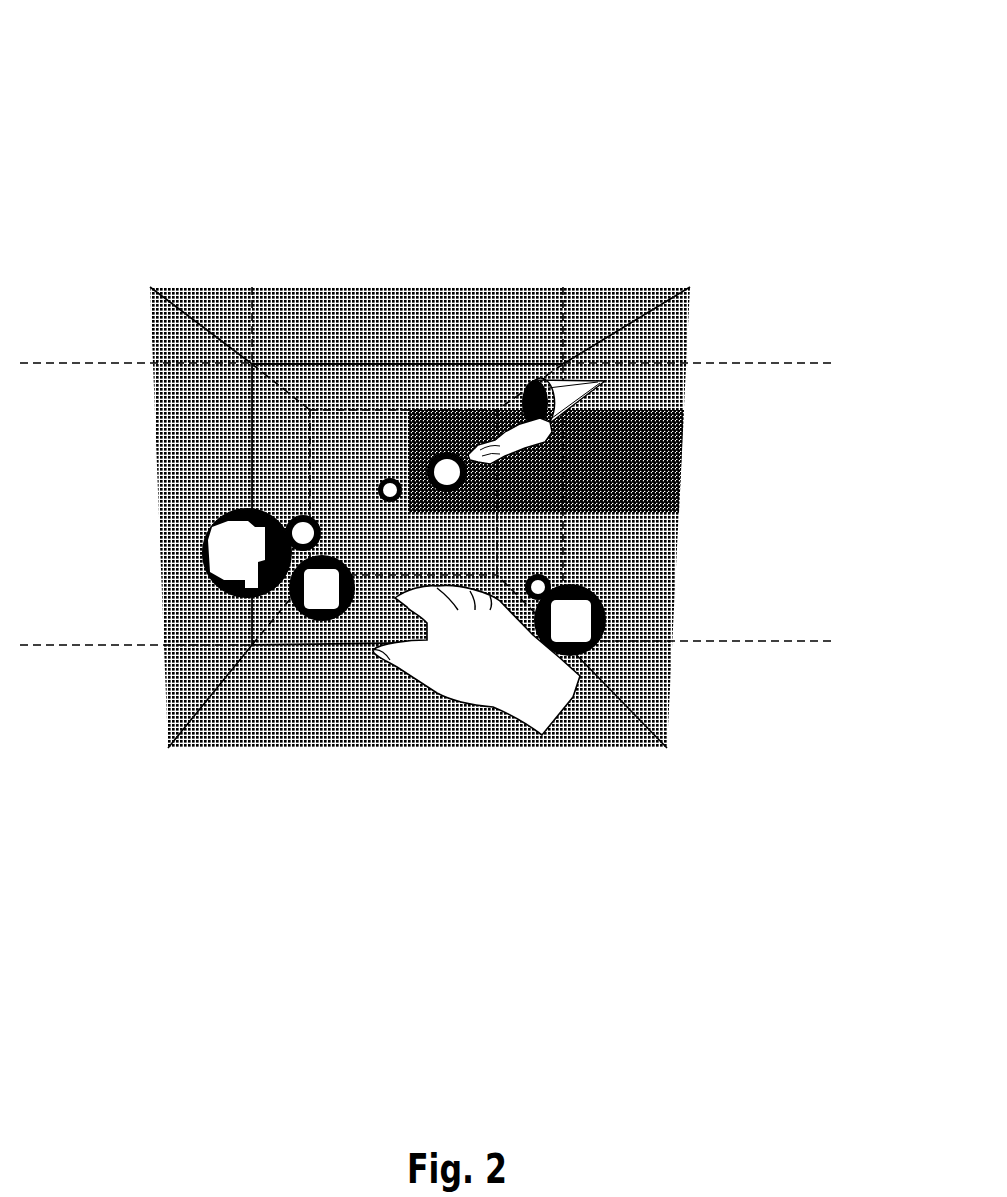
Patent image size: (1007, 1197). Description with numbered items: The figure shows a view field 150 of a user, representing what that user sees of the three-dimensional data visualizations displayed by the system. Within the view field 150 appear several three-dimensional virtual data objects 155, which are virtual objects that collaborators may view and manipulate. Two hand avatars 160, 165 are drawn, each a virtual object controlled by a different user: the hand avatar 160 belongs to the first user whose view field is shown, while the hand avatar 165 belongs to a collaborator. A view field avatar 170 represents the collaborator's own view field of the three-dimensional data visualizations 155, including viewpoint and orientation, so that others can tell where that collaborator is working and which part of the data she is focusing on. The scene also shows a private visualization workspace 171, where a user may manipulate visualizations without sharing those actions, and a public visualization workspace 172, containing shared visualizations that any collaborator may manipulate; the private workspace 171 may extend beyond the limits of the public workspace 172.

The view field 150 is at (722, 83).
The 3D virtual data object 155 is at (594, 615).
The hand avatar 160 is at (504, 678).
The hand avatar 165 is at (506, 430).
The view field avatar 170 is at (573, 384).
The private visualization workspace 171 is at (101, 581).
The public visualization workspace 172 is at (218, 311).